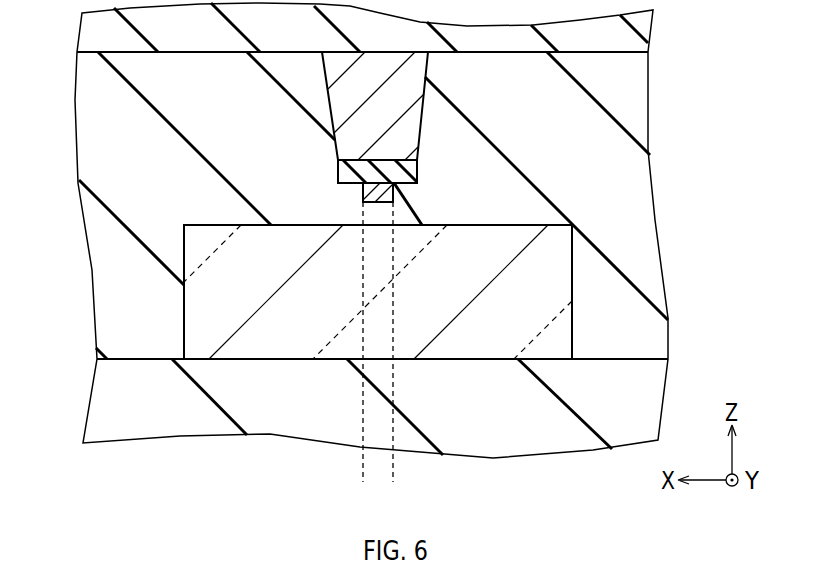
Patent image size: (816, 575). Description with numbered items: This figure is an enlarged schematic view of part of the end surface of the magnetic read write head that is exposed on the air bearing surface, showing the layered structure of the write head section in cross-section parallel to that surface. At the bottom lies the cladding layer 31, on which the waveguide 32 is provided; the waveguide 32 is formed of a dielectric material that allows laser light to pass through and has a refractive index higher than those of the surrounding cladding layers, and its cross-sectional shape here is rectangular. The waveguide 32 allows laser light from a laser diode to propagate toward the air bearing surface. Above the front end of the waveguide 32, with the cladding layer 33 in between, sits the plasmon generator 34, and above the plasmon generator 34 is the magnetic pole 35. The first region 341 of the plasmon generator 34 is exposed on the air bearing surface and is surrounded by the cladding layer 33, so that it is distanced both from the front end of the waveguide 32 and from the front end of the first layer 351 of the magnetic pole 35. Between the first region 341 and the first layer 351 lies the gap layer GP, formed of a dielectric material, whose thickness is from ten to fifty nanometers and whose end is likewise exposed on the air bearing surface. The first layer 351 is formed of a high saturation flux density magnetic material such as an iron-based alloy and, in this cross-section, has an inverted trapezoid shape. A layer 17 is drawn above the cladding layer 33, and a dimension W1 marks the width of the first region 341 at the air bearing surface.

The upper layer 17 is at (643, 32).
The magnetic pole 35 is at (542, 106).
The first layer 351 is at (405, 103).
The cladding layer 33 is at (628, 143).
The gap layer GP is at (385, 170).
The plasmon generator 34 is at (562, 207).
The first region 341 is at (392, 188).
The waveguide 32 is at (562, 288).
The cladding layer 31 is at (655, 384).
The width W1 is at (392, 477).